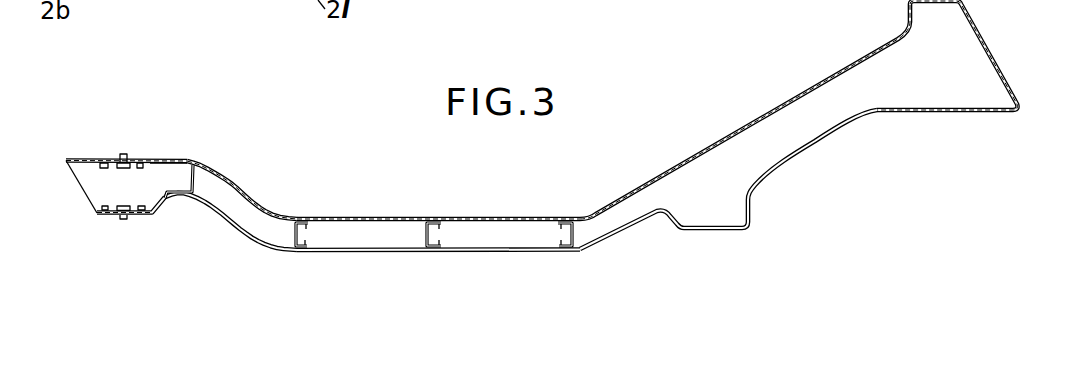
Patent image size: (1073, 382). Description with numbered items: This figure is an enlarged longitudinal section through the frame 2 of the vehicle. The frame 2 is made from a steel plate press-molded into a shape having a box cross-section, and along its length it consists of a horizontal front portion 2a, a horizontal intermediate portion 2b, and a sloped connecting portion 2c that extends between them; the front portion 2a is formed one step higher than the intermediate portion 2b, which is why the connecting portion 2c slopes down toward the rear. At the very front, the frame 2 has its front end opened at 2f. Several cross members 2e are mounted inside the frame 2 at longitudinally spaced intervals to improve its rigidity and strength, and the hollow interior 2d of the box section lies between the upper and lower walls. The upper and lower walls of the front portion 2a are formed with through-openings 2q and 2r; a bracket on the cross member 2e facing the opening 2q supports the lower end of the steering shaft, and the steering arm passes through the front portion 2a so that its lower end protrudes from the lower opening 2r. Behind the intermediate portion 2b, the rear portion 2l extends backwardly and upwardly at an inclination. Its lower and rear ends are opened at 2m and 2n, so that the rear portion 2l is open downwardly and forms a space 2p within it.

The frame 2 is at (544, 148).
The horizontal front portion 2a is at (95, 158).
The horizontal intermediate portion 2b is at (430, 217).
The sloped connecting portion 2c is at (242, 190).
The hollow cavity 2d is at (379, 222).
The cross member 2e is at (194, 180).
The front end opening 2f is at (89, 183).
The rear portion 2l is at (805, 97).
The lower end opening 2m is at (988, 42).
The rear end opening 2n is at (870, 118).
The space 2p is at (908, 77).
The through-opening 2q is at (152, 162).
The through-opening 2r is at (157, 199).